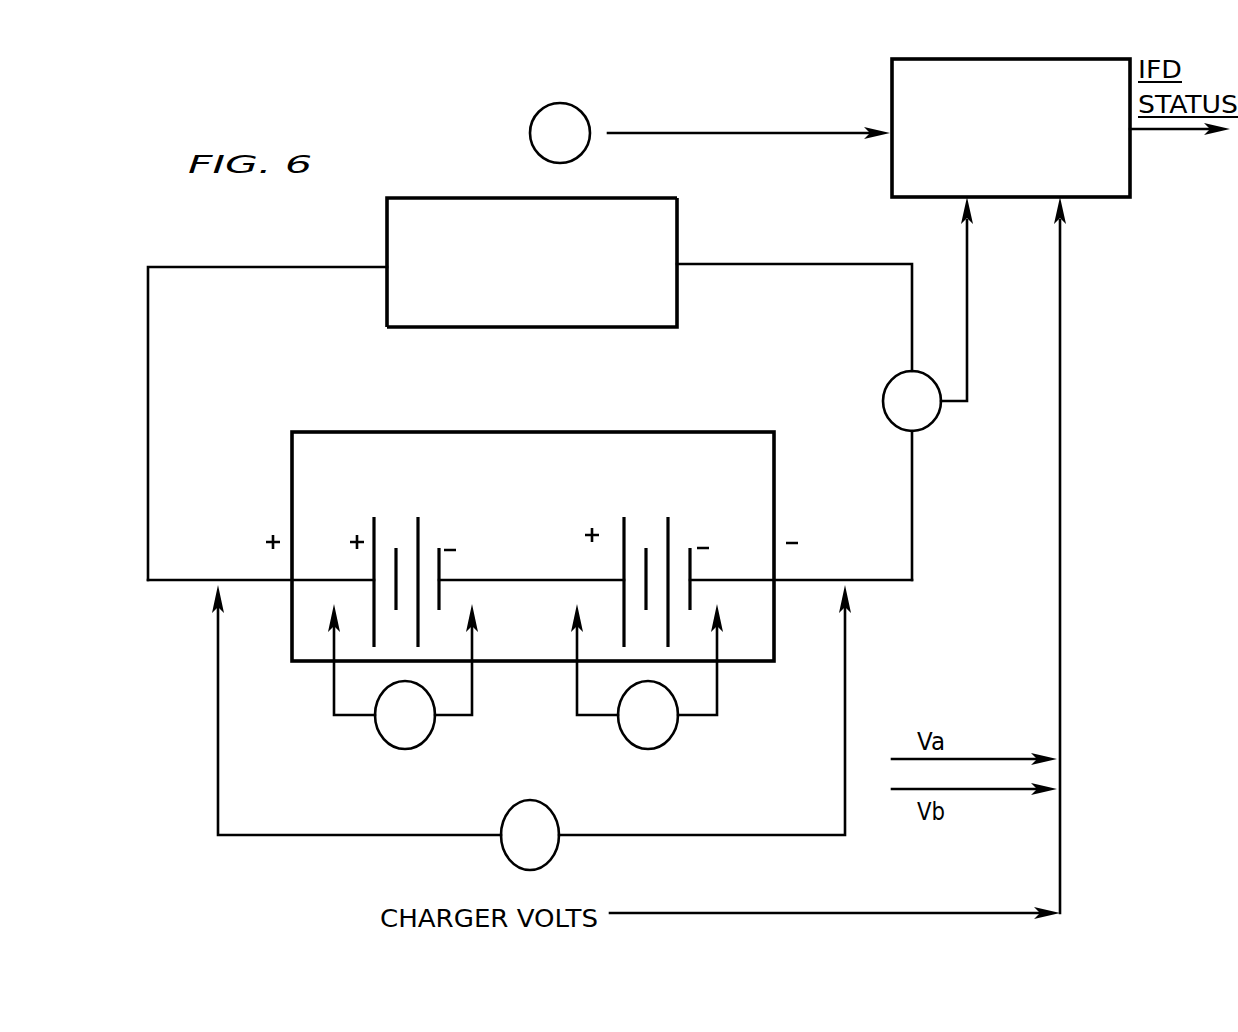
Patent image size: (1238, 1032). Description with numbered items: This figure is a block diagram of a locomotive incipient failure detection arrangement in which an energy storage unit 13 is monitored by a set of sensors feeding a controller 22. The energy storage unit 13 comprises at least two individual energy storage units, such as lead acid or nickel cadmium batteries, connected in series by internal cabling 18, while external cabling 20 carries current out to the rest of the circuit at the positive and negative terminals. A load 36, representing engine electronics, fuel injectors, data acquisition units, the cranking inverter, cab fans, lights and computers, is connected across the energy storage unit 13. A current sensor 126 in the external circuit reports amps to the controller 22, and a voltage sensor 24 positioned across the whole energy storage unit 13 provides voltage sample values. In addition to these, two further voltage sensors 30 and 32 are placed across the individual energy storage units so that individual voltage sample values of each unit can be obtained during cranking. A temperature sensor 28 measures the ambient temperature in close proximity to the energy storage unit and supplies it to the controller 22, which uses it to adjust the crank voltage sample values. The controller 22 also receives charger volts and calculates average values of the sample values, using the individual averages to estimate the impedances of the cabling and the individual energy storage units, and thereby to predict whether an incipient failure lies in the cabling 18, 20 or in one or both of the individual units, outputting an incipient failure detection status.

The energy storage unit 13 is at (702, 494).
The internal cabling 18 is at (535, 574).
The external cabling 20 is at (207, 571).
The controller 22 is at (998, 187).
The voltage sensor 24 is at (628, 891).
The temperature sensor 28 is at (512, 176).
The voltage sensor 30 is at (467, 707).
The voltage sensor 32 is at (609, 707).
The load 36 is at (640, 309).
The current sensor 126 is at (998, 482).